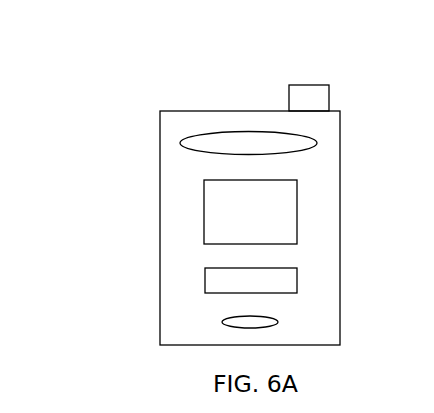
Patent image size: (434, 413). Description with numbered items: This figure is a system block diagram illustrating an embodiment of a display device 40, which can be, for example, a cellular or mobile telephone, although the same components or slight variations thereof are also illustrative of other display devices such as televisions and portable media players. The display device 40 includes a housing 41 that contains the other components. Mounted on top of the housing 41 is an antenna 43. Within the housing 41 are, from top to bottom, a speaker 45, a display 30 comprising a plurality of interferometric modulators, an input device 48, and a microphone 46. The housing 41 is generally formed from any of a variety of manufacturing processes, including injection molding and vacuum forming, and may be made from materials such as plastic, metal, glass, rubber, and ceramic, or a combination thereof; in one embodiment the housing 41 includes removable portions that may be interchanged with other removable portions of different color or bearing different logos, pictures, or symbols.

The display device 40 is at (124, 52).
The housing 41 is at (183, 110).
The antenna 43 is at (314, 84).
The speaker 45 is at (317, 143).
The display 30 is at (297, 205).
The input device 48 is at (297, 280).
The microphone 46 is at (278, 320).